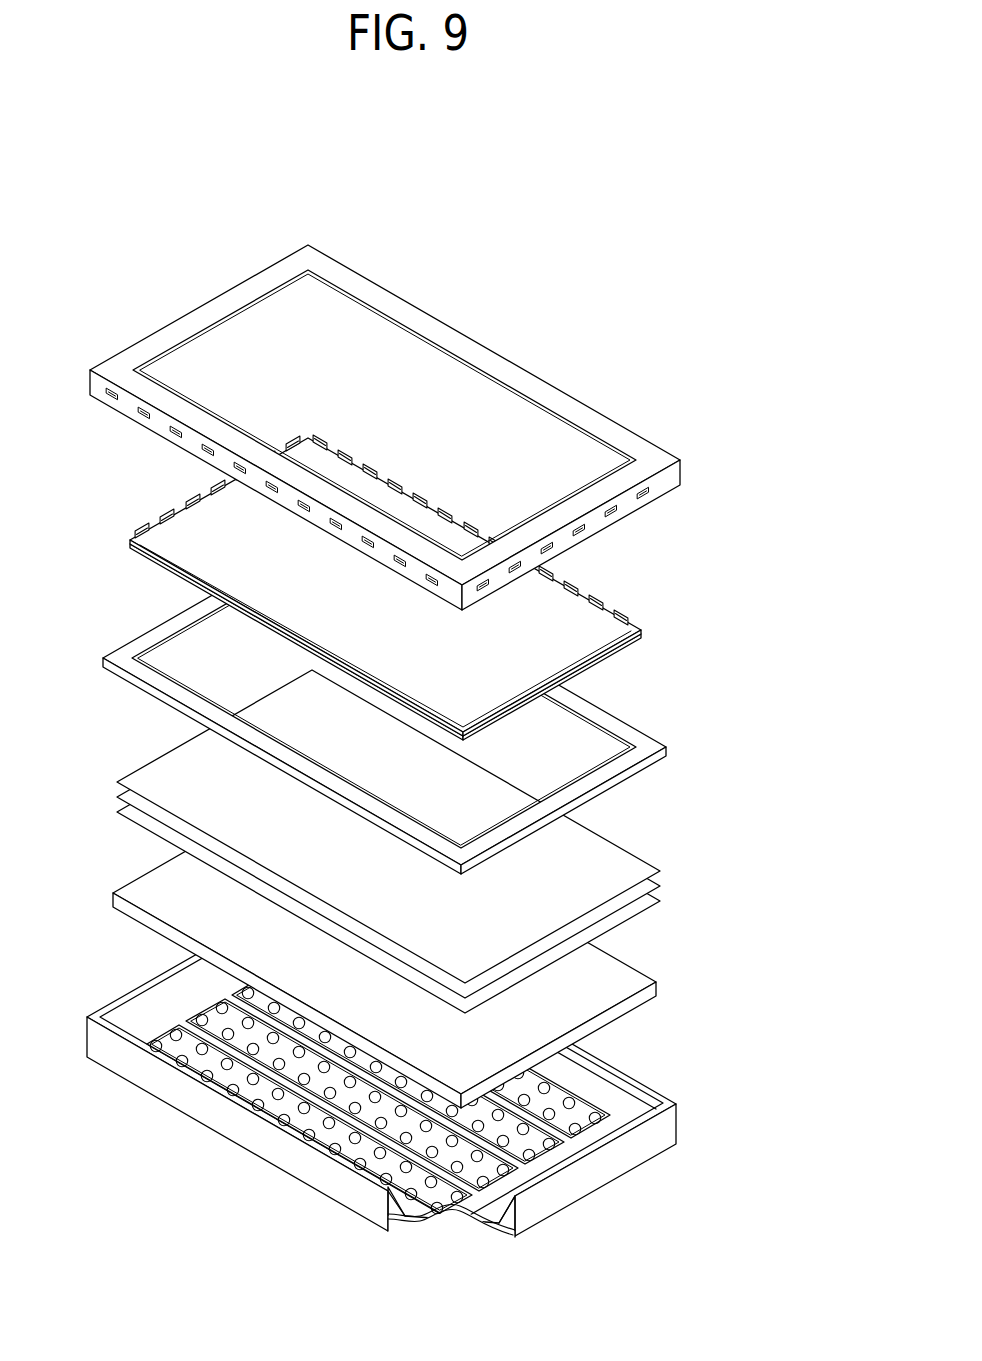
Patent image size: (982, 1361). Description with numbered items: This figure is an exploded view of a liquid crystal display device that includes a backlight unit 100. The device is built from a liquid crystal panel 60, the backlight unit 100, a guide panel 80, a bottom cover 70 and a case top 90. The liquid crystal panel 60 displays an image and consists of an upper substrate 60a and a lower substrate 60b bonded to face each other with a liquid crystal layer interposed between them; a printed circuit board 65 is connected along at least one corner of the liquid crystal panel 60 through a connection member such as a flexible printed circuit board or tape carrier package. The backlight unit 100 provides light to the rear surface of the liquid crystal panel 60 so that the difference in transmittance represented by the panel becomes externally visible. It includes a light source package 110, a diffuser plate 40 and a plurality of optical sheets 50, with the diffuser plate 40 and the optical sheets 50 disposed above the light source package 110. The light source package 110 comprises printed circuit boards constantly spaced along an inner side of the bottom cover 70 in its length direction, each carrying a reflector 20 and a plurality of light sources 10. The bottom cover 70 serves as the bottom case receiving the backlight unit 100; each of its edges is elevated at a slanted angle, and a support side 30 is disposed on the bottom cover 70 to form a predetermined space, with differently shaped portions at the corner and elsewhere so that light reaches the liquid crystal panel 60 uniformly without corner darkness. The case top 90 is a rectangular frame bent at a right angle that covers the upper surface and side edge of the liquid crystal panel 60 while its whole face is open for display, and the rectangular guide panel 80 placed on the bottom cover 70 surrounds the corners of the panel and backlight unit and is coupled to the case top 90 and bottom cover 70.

The case top 90 is at (680, 468).
The printed circuit board 65 is at (592, 597).
The liquid crystal panel 60 is at (440, 587).
The upper substrate 60a is at (604, 628).
The lower substrate 60b is at (607, 650).
The guide panel 80 is at (670, 748).
The optical sheets 50 is at (431, 841).
The diffuser plate 40 is at (660, 985).
The support side 30 is at (606, 1083).
The bottom cover 70 is at (419, 1091).
The backlight unit 100 is at (452, 980).
The light source package 110 is at (449, 1118).
The light sources 10 is at (500, 1180).
The reflector 20 is at (522, 1192).